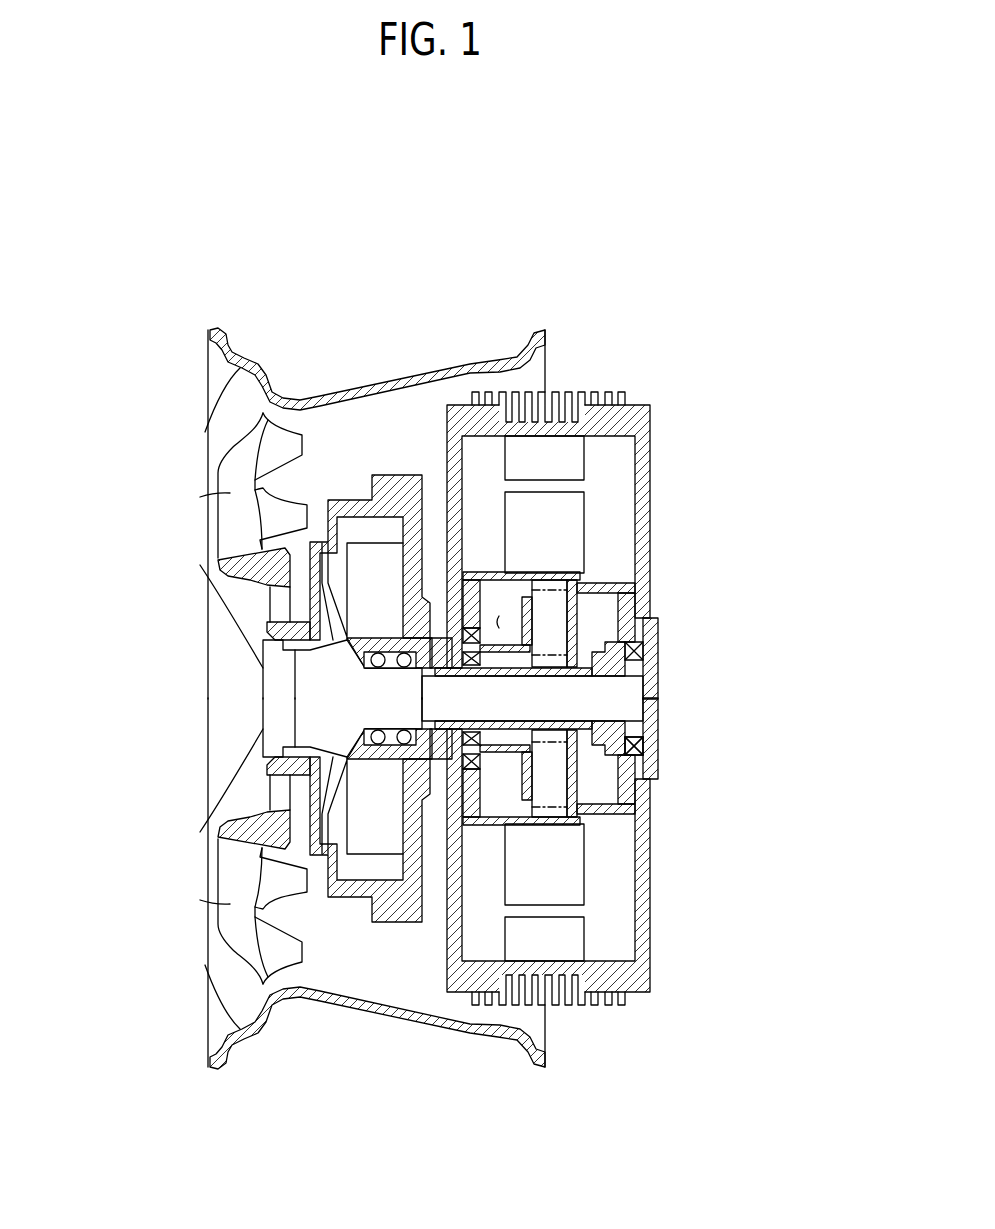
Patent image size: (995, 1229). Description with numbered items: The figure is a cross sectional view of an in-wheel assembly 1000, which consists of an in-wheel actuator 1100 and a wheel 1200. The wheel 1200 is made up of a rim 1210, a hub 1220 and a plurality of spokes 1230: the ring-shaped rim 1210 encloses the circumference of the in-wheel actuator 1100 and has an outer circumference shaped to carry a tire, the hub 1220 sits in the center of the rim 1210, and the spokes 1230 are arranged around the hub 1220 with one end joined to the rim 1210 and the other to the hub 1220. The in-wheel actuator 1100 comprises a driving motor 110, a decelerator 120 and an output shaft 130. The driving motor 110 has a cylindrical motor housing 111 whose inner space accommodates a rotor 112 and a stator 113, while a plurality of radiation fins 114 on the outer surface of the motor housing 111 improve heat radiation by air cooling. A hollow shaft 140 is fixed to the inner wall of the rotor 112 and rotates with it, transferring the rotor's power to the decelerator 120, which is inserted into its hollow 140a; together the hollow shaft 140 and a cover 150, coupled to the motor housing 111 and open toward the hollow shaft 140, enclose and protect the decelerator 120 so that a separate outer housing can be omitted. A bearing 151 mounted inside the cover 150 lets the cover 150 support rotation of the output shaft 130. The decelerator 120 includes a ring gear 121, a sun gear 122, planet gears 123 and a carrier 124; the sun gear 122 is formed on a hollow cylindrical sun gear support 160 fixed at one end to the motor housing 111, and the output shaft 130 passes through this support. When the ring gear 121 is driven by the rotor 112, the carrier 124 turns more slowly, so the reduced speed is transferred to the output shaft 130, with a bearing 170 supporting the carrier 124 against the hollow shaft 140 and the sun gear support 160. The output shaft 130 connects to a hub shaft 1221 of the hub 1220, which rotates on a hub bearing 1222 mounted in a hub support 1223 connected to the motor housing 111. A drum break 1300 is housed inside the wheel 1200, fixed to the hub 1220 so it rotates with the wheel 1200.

The in-wheel assembly 1000 is at (620, 276).
The in-wheel actuator 1100 is at (656, 399).
The driving motor 110 is at (718, 440).
The motor housing 111 is at (640, 481).
The rotor 112 is at (583, 510).
The stator 113 is at (583, 451).
The radiation fins 114 is at (578, 392).
The decelerator 120 is at (590, 627).
The ring gear 121 is at (557, 592).
The sun gear 122 is at (557, 663).
The planet gears 123 is at (555, 605).
The carrier 124 is at (612, 670).
The output shaft 130 is at (625, 702).
The hollow shaft 140 is at (540, 574).
The hollow 140a is at (490, 616).
The cover 150 is at (648, 732).
The bearing 151 is at (643, 745).
The sun gear support 160 is at (575, 727).
The bearing 170 is at (480, 760).
The wheel 1200 is at (120, 432).
The rim 1210 is at (213, 432).
The hub 1220 is at (288, 693).
The hub shaft 1221 is at (308, 697).
The hub bearing 1222 is at (370, 732).
The hub support 1223 is at (387, 752).
The spokes 1230 is at (235, 493).
The drum break 1300 is at (352, 892).